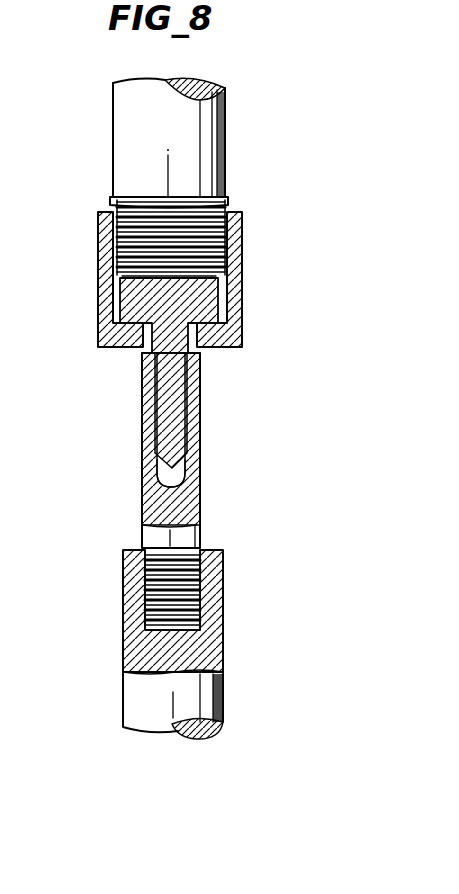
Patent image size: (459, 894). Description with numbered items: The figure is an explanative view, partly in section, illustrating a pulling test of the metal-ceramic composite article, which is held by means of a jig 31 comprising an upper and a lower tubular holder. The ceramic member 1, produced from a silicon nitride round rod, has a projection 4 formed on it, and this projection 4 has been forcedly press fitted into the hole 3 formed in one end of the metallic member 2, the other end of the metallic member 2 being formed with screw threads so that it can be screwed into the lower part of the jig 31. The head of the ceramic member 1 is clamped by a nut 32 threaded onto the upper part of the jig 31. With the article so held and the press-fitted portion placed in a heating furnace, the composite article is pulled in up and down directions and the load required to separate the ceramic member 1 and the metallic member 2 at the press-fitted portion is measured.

The jig 31 is at (227, 125).
The nut 32 is at (230, 267).
The ceramic member 1 is at (202, 310).
The metallic member 2 is at (193, 463).
The hole 3 is at (158, 480).
The projection 4 is at (160, 412).